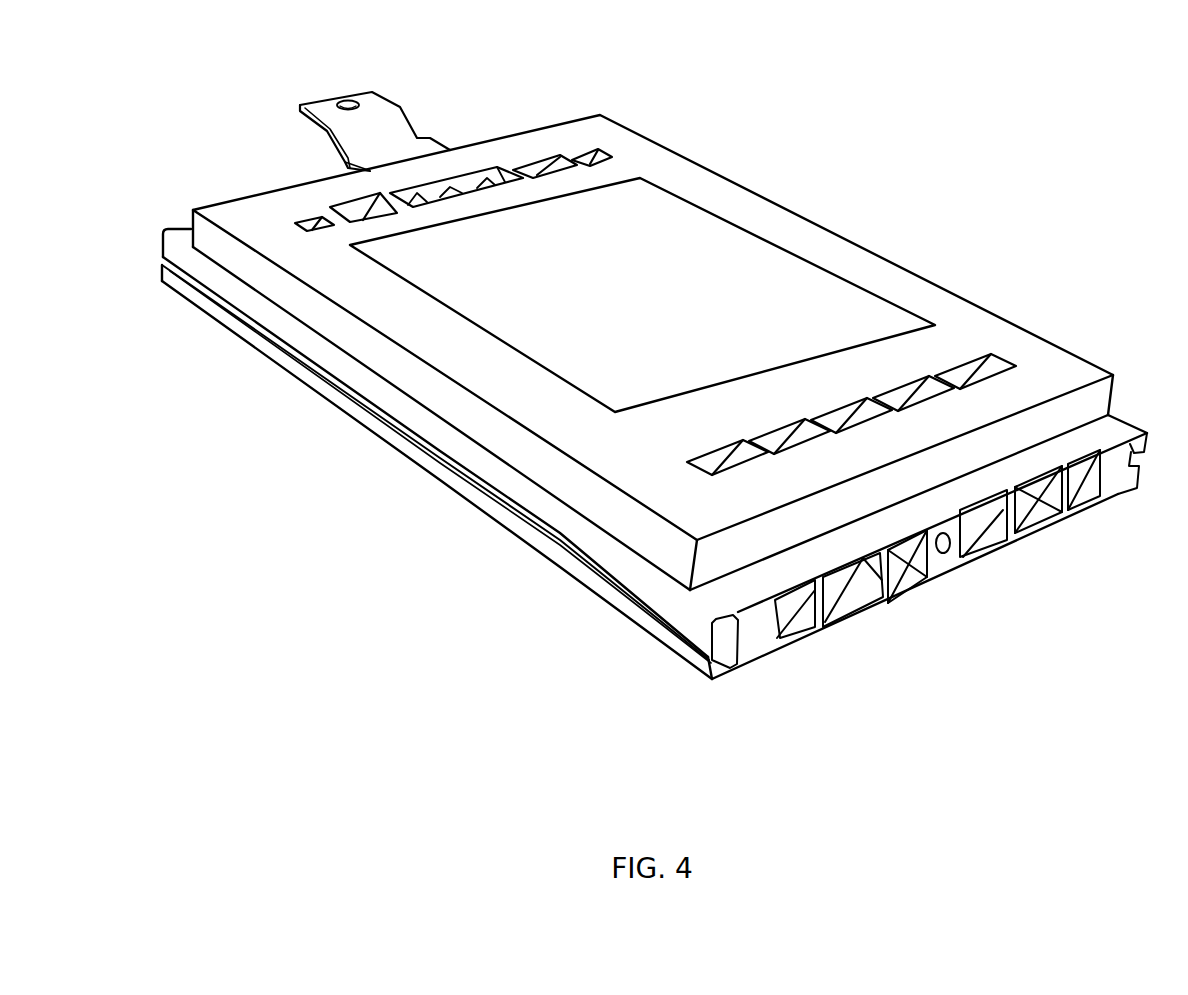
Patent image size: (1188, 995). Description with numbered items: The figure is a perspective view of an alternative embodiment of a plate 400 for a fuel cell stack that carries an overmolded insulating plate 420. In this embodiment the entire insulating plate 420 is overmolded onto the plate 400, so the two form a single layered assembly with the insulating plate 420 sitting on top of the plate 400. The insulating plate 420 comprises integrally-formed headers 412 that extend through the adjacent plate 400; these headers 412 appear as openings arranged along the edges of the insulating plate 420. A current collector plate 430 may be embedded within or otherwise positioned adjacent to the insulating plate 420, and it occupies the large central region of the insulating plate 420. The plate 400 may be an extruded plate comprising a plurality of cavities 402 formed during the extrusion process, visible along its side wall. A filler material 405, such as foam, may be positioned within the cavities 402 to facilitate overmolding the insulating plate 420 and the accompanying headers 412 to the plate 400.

The plate 400 is at (1100, 492).
The cavities 402 is at (827, 630).
The filler material 405 is at (855, 590).
The headers 412 is at (525, 155).
The insulating plate 420 is at (1075, 365).
The current collector plate 430 is at (713, 258).